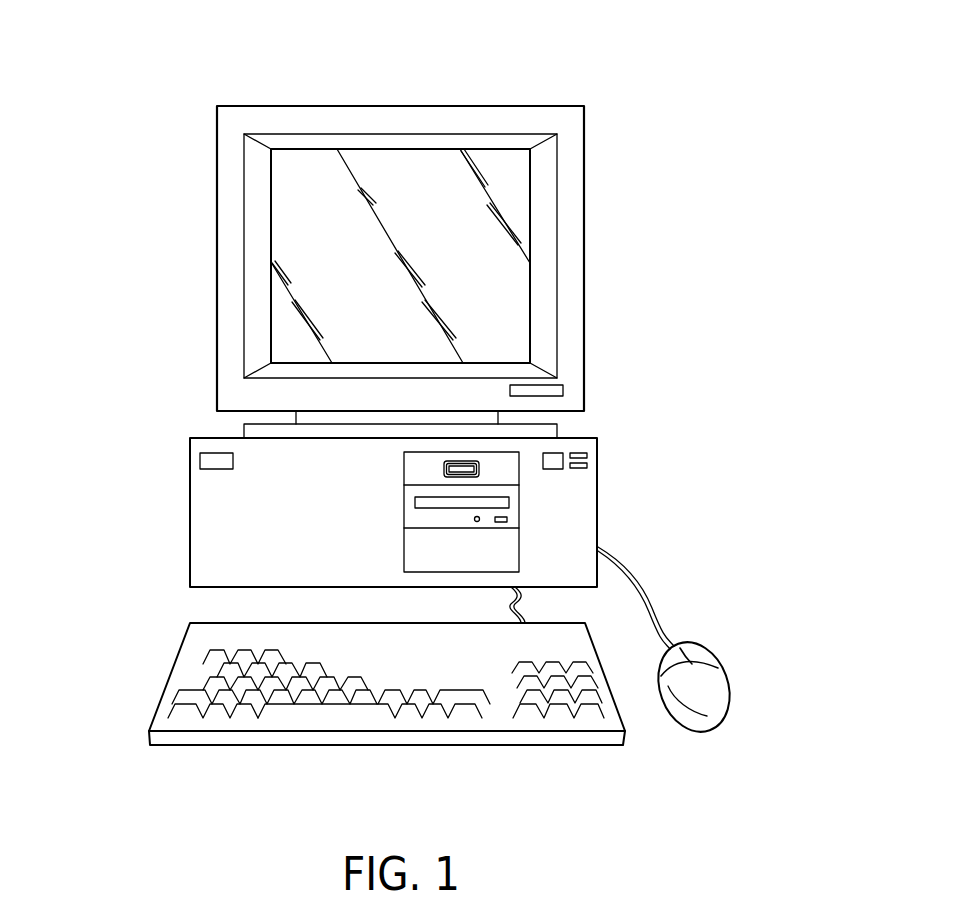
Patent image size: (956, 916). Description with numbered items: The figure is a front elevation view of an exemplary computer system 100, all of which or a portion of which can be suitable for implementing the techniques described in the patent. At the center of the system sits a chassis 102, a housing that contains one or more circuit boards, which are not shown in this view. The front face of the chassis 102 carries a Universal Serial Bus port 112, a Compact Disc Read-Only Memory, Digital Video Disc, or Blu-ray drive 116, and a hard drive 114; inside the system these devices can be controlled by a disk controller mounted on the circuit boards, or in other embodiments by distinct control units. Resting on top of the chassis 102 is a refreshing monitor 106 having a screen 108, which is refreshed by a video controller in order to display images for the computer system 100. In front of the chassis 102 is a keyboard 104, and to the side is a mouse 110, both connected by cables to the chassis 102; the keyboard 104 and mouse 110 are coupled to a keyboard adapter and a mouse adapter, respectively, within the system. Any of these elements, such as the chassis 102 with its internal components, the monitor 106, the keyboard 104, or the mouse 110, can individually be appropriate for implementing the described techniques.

The computer system 100 is at (575, 82).
The chassis 102 is at (190, 515).
The keyboard 104 is at (170, 670).
The refreshing monitor 106 is at (290, 106).
The screen 108 is at (318, 261).
The mouse 110 is at (713, 675).
The Universal Serial Bus (USB) port 112 is at (480, 463).
The hard drive 114 is at (510, 548).
The CD-ROM, DVD, or Blu-ray drive 116 is at (510, 508).